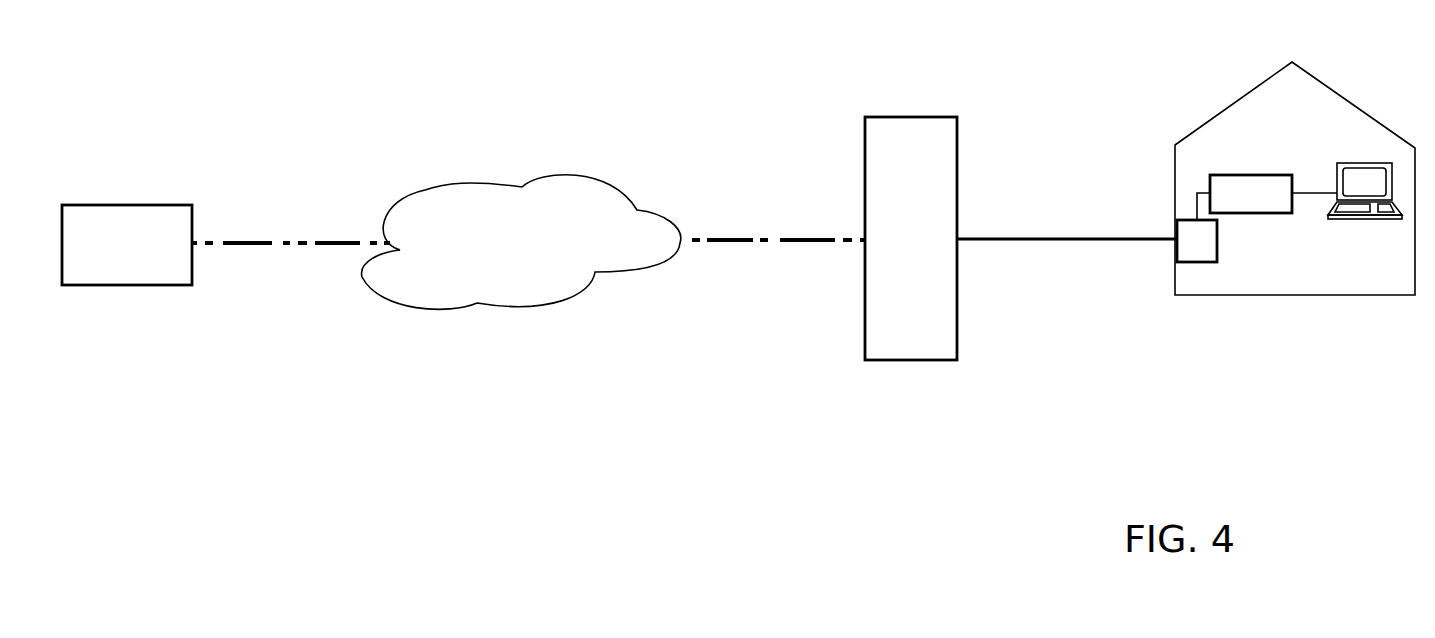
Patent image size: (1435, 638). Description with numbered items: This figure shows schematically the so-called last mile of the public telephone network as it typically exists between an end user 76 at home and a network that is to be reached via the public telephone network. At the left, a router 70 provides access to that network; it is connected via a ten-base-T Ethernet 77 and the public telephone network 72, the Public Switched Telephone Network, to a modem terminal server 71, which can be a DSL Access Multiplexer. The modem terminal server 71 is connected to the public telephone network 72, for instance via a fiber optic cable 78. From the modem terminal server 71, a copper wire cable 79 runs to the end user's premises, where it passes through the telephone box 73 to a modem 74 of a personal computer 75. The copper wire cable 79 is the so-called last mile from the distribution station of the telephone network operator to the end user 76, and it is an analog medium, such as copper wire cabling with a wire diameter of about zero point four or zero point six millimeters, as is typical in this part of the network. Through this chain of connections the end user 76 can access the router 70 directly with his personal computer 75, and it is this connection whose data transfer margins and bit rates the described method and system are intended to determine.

The router 70 is at (127, 245).
The modem terminal server 71 is at (911, 238).
The public telephone network 72 is at (521, 242).
The telephone box 73 is at (1197, 227).
The modem 74 is at (1273, 194).
The personal computer 75 is at (1352, 220).
The end user 76 is at (1277, 135).
The Ethernet 77 is at (269, 243).
The fiber optic cable 78 is at (783, 240).
The copper wire cable 79 is at (1078, 238).